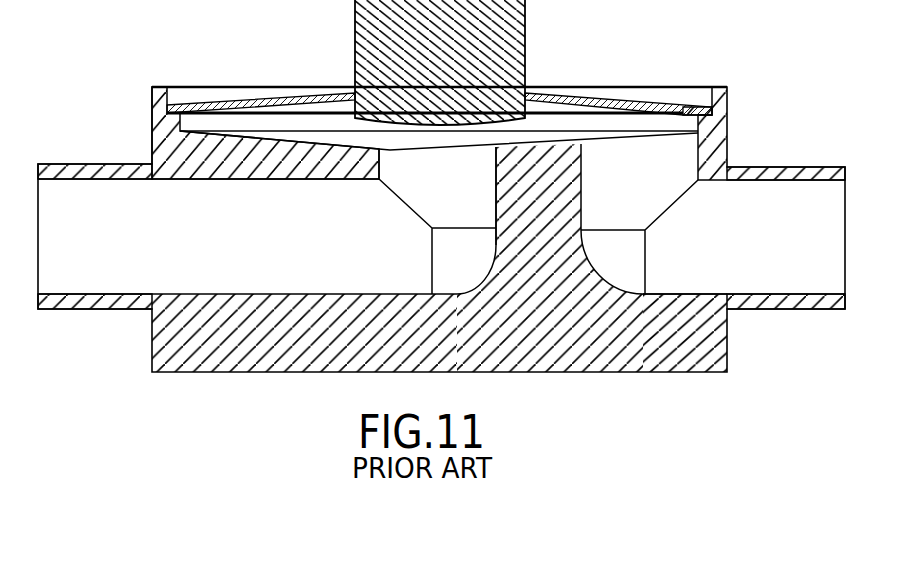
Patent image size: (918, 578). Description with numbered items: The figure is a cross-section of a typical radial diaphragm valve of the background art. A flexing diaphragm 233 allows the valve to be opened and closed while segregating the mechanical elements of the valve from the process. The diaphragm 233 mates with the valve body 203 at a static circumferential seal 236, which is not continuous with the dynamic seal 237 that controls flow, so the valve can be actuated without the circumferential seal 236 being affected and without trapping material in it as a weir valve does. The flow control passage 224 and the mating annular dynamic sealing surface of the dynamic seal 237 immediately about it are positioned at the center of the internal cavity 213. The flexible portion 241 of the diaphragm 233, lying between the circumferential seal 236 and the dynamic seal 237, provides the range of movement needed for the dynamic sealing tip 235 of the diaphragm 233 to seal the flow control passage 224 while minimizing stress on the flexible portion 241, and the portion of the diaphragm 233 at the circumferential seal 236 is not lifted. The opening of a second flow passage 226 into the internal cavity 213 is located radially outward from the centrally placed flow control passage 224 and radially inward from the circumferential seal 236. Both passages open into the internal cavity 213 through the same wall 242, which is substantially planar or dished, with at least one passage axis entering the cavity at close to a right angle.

The valve body 203 is at (708, 345).
The internal cavity 213 is at (340, 138).
The flow control passage 224 is at (72, 192).
The flow passage 226 is at (795, 198).
The diaphragm 233 is at (600, 100).
The dynamic sealing tip 235 is at (487, 110).
The circumferential seal 236 is at (708, 117).
The dynamic seal 237 is at (373, 156).
The flexible portion 241 is at (235, 100).
The wall 242 is at (305, 143).